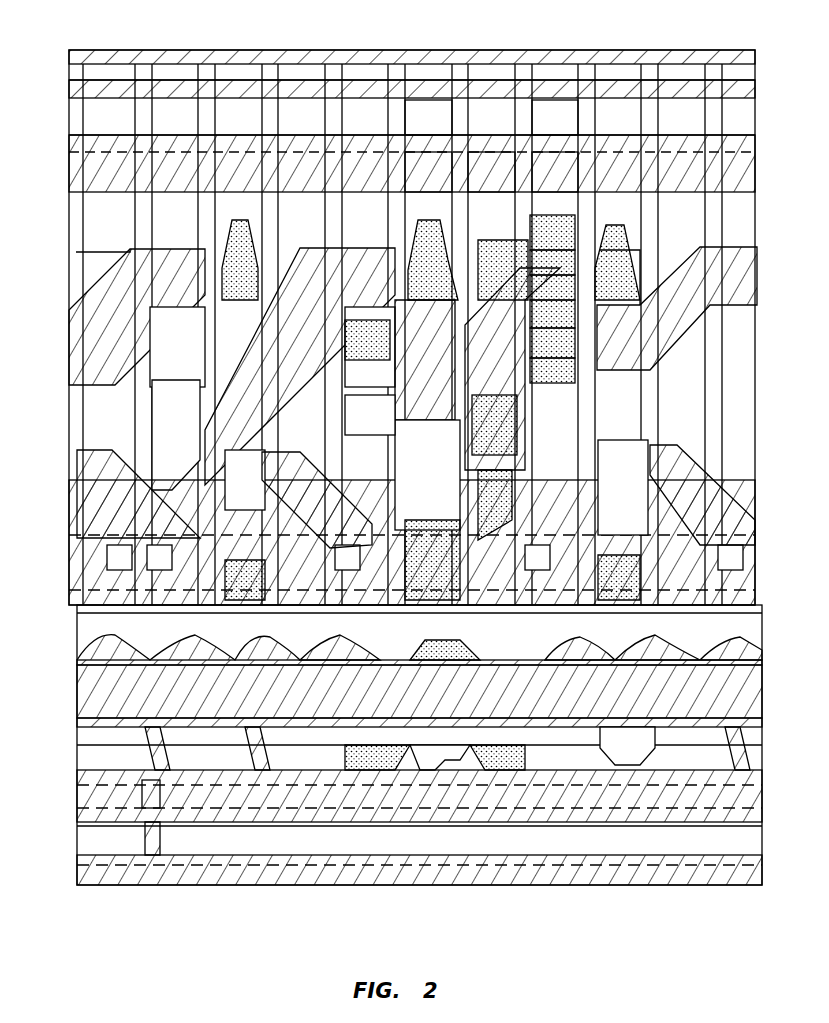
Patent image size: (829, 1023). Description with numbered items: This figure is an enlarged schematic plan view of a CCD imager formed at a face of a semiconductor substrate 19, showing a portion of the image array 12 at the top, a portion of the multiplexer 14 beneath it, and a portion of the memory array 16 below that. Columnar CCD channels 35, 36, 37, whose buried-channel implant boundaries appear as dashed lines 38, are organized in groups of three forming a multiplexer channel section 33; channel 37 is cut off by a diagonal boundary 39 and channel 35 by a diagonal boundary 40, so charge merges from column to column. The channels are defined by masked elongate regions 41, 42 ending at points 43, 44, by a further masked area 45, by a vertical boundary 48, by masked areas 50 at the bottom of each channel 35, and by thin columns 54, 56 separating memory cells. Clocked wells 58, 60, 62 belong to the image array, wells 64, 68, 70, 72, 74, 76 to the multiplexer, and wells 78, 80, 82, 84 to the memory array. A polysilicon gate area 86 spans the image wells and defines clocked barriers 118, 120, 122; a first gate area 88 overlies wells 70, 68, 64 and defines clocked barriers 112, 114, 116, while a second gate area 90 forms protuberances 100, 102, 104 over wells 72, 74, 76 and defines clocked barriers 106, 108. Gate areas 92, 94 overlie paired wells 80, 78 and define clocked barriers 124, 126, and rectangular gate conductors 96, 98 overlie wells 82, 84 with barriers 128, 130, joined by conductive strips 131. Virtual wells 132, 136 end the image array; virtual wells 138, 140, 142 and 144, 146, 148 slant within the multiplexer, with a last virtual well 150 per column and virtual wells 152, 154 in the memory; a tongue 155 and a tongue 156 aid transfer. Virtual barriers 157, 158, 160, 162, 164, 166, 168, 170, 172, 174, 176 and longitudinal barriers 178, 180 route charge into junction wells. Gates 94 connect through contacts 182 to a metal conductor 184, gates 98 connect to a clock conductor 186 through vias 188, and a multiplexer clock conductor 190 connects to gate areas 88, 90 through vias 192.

The image array 12 is at (768, 32).
The multiplexer 14 is at (762, 345).
The memory array 16 is at (765, 800).
The semiconductor substrate 19 is at (68, 190).
The multiplexer channel section 33 is at (305, 360).
The first CCD channel 35 is at (236, 48).
The second CCD channel 36 is at (300, 48).
The third CCD channel 37 is at (362, 48).
The dashed lines 38 is at (135, 118).
The diagonal boundary 39 is at (598, 432).
The diagonal boundary 40 is at (470, 545).
The elongate masked region 41 is at (262, 230).
The elongate masked region 42 is at (522, 210).
The end point 43 is at (268, 492).
The end point 44 is at (525, 398).
The elongate masked area 45 is at (390, 232).
The vertical channel implant boundary 48 is at (500, 660).
The masked area 50 is at (440, 746).
The thin column 54 is at (540, 885).
The thin column 56 is at (448, 885).
The image array clocked well 58 is at (428, 172).
The image array clocked well 60 is at (491, 172).
The image array clocked well 62 is at (555, 172).
The multiplexer clocked well 64 is at (425, 360).
The multiplexer clocked well 68 is at (491, 323).
The multiplexer clocked well 70 is at (552, 287).
The terminal clocked well 72 is at (355, 369).
The terminal clocked well 74 is at (493, 505).
The clocked well 76 is at (432, 561).
The memory array clocked well 78 is at (494, 698).
The memory array clocked well 80 is at (419, 691).
The memory array clocked well 82 is at (485, 803).
The memory array clocked well 84 is at (419, 796).
The polysilicon gate area 86 is at (745, 160).
The first gate area 88 is at (740, 288).
The second gate area 90 is at (740, 500).
The polysilicon gate area 92 is at (125, 648).
The polysilicon gate area 94 is at (295, 650).
The gate conductor 96 is at (672, 885).
The gate conductor 98 is at (175, 780).
The protuberance 100 is at (552, 413).
The protuberance 102 is at (508, 496).
The protuberance 104 is at (430, 577).
The clocked barrier 106 is at (550, 370).
The clocked barrier 108 is at (510, 520).
The clocked barrier 112 is at (553, 260).
The clocked barrier 114 is at (490, 295).
The clocked barrier 116 is at (428, 323).
The clocked barrier 118 is at (575, 135).
The clocked barrier 120 is at (520, 108).
The clocked barrier 122 is at (405, 128).
The clocked barrier 124 is at (500, 655).
The clocked barrier 126 is at (333, 622).
The clocked barrier 128 is at (445, 838).
The clocked barrier 130 is at (535, 760).
The conductive strip 131 is at (145, 738).
The virtual well 132 is at (508, 905).
The virtual well 136 is at (555, 117).
The virtual well 138 is at (433, 260).
The virtual well 140 is at (502, 268).
The virtual well 142 is at (552, 231).
The virtual junction well 144 is at (438, 520).
The virtual junction well 146 is at (494, 425).
The virtual well 148 is at (552, 343).
The terminal virtual well 150 is at (495, 645).
The virtual well 152 is at (340, 750).
The virtual well 154 is at (535, 735).
The tongue-shaped formation 155 is at (440, 232).
The tongue 156 is at (367, 332).
The virtual barrier 157 is at (405, 180).
The virtual barrier 158 is at (494, 205).
The virtual barrier 160 is at (578, 206).
The virtual barrier 162 is at (443, 440).
The virtual barrier 164 is at (512, 369).
The virtual barrier 166 is at (552, 314).
The virtual barrier 168 is at (420, 638).
The virtual barrier 170 is at (377, 746).
The virtual barrier 172 is at (497, 746).
The virtual barrier 174 is at (330, 840).
The virtual barrier 176 is at (535, 835).
The longitudinal virtual barrier 178 is at (540, 480).
The longitudinal virtual barrier 180 is at (460, 506).
The contact 182 is at (778, 650).
The A first level metal conductor 184 is at (760, 700).
The phi-B clock conductor 186 is at (762, 825).
The via 188 is at (145, 790).
The multiplexer clock conductor 190 is at (135, 552).
The via 192 is at (100, 598).